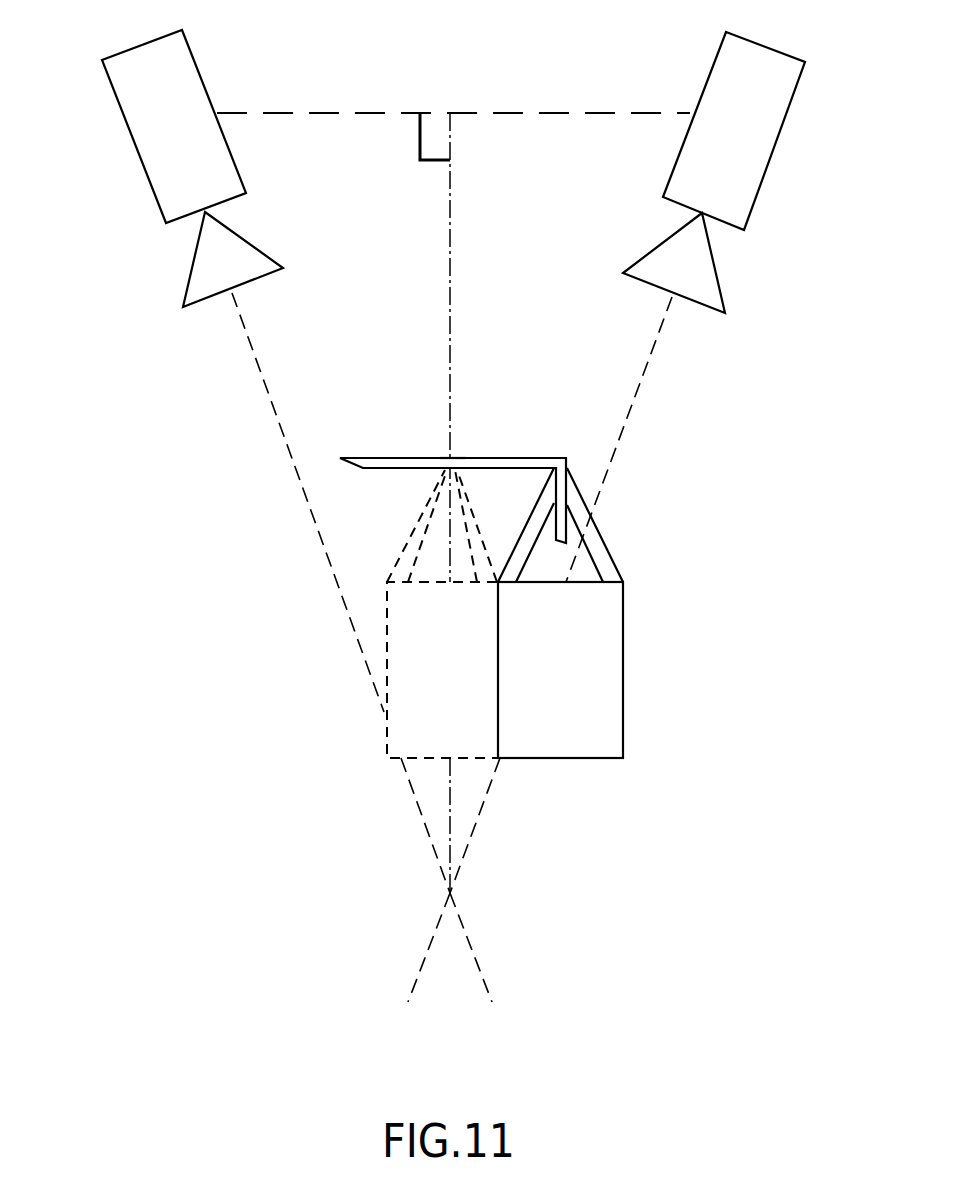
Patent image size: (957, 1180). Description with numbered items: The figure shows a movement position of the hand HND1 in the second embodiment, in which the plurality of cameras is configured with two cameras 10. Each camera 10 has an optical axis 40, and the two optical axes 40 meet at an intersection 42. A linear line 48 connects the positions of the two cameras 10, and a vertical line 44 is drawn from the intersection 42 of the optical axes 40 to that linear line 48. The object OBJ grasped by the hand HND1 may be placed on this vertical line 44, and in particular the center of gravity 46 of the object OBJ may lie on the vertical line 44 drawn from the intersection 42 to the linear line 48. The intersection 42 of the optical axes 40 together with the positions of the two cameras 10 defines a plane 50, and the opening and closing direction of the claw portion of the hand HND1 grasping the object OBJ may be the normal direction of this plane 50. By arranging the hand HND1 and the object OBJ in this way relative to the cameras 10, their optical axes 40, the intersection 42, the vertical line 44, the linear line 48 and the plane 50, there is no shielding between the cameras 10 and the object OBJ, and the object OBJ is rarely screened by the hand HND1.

The camera 10 is at (150, 194).
The optical axis 40 is at (325, 551).
The intersection 42 is at (450, 893).
The vertical line 44 is at (452, 197).
The center of gravity 46 is at (453, 460).
The linear line 48 is at (572, 112).
The plane 50 is at (320, 138).
The object OBJ is at (340, 458).
The hand HND1 is at (603, 760).